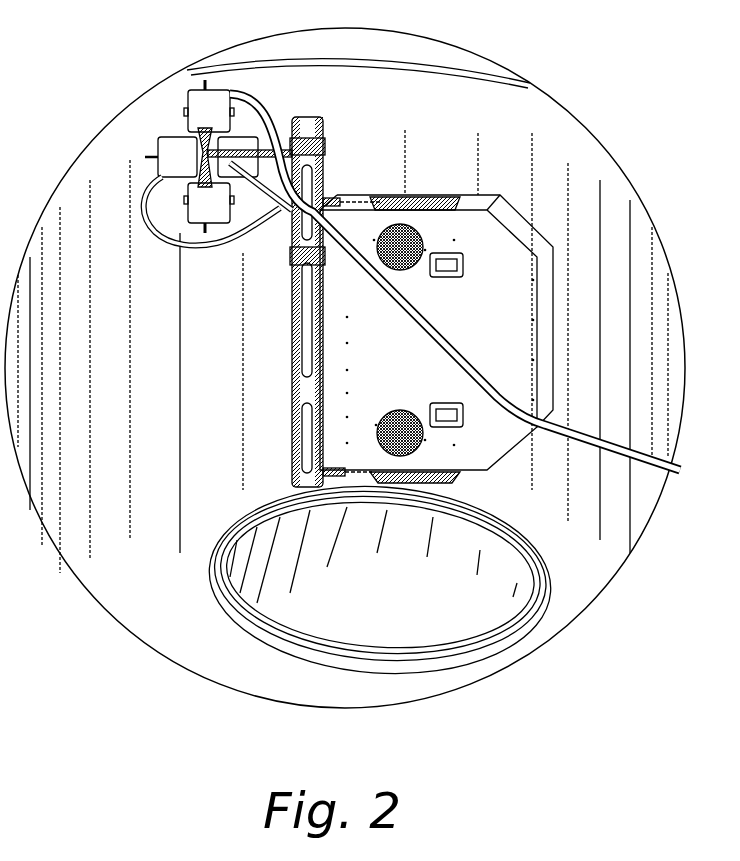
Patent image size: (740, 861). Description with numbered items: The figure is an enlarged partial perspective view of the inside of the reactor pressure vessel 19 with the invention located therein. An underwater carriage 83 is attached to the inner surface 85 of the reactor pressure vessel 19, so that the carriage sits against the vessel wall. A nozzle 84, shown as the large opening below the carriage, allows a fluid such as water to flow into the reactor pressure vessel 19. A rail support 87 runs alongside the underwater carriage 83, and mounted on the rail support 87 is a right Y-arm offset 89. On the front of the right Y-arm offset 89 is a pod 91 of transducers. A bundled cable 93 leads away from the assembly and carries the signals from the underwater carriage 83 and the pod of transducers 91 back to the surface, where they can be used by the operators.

The reactor pressure vessel 19 is at (453, 73).
The underwater carriage 83 is at (436, 339).
The nozzle 84 is at (380, 579).
The inner surface 85 is at (343, 351).
The rail support 87 is at (290, 367).
The right Y-arm offset 89 is at (286, 187).
The pod of transducers 91 is at (163, 126).
The bundled cable 93 is at (390, 300).